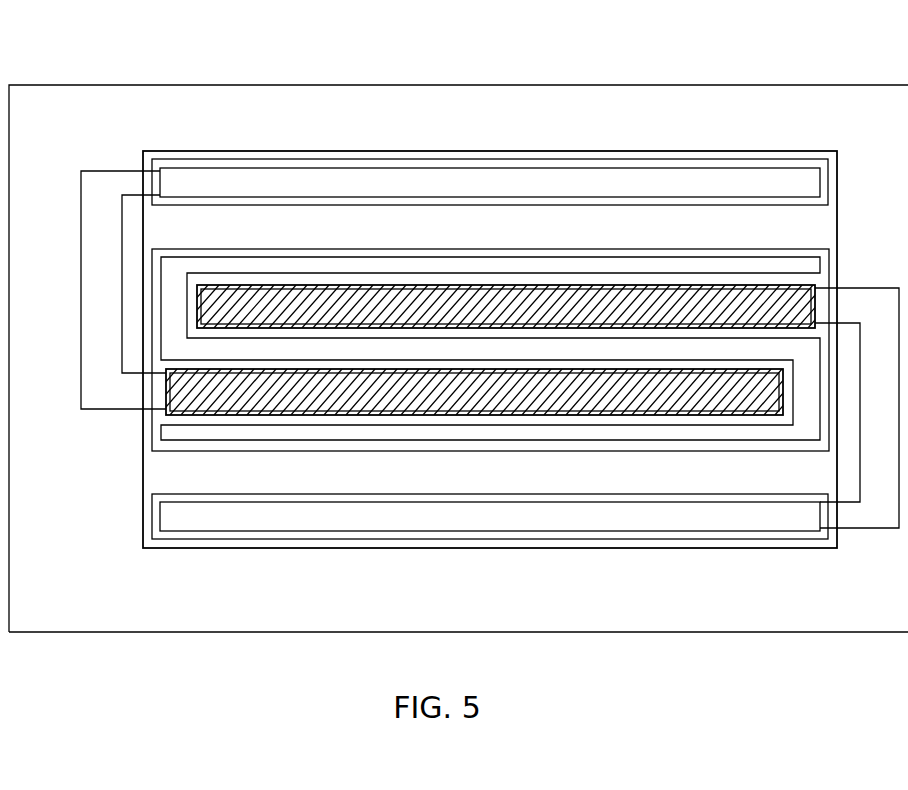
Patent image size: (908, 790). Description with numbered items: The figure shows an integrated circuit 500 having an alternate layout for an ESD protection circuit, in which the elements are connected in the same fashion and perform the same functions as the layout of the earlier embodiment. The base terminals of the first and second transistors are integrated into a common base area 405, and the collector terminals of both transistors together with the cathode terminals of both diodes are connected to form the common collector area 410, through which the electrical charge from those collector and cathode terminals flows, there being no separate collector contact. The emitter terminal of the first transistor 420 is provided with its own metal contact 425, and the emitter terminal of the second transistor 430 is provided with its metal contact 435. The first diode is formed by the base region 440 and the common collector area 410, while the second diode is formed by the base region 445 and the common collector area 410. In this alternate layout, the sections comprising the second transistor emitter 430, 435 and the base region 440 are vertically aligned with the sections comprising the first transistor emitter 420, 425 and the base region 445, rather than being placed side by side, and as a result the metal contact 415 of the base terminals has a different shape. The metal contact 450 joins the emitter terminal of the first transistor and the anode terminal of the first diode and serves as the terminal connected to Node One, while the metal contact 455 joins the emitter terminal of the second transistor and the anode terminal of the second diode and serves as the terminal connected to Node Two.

The integrated circuit 500 is at (772, 94).
The common base area 405 is at (157, 417).
The common collector area 410 is at (657, 217).
The metal contact of the base terminals 415 is at (811, 388).
The emitter terminal of first transistor 420 is at (352, 402).
The metal contact of the emitter terminal of first transistor 425 is at (412, 393).
The emitter terminal of second transistor 430 is at (257, 300).
The metal contact of the emitter terminal of second transistor 435 is at (332, 307).
The base region of first diode 440 is at (432, 157).
The base region of second diode 445 is at (442, 533).
The metal contact of the emitter terminal of first transistor and anode terminal of 450 is at (94, 197).
The metal contact of the emitter terminal of second transistor and anode terminal of 455 is at (878, 500).